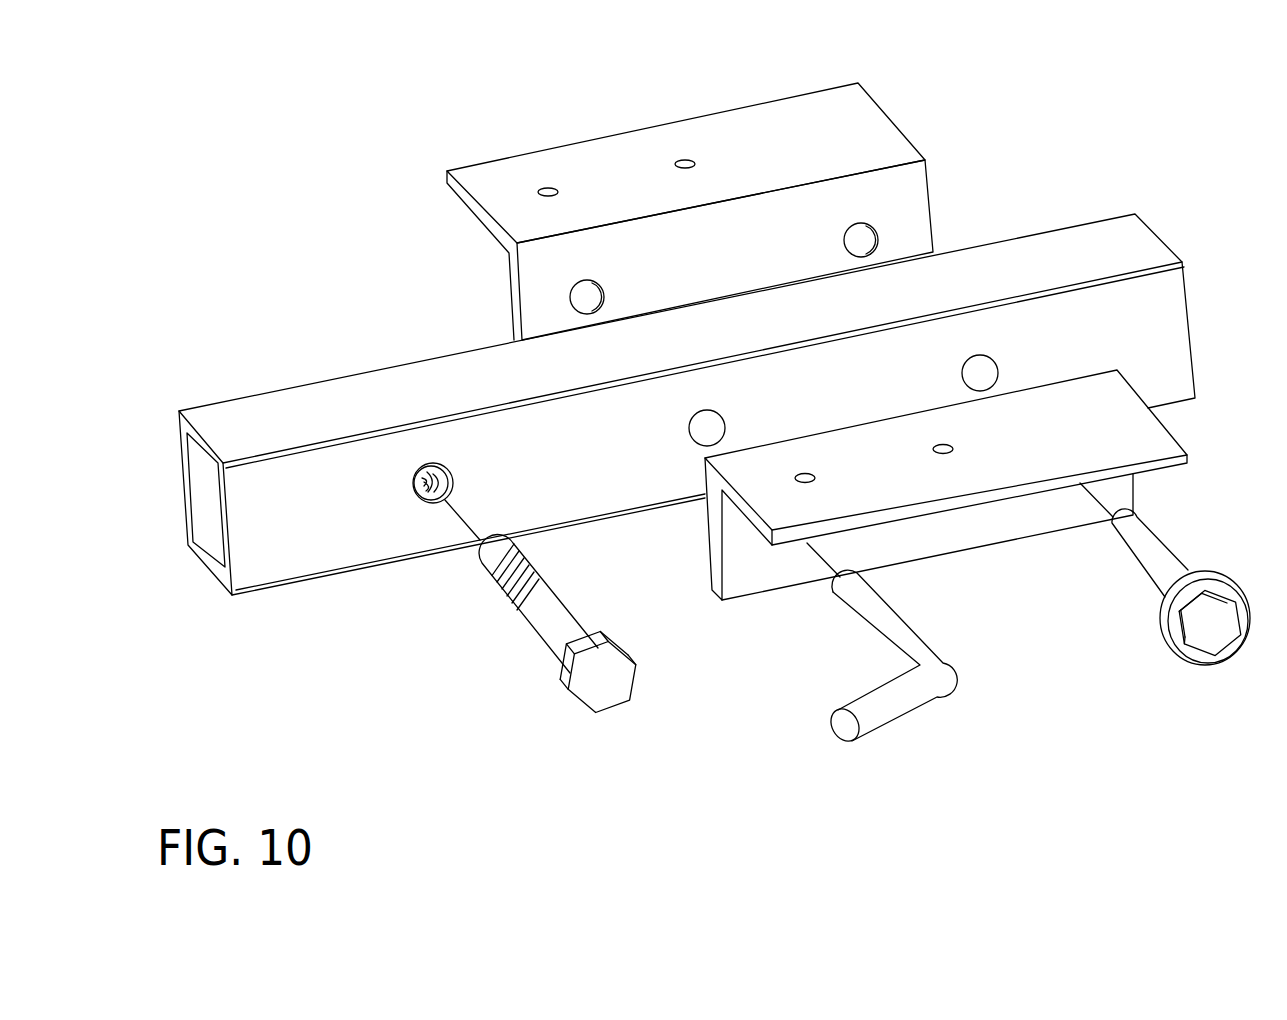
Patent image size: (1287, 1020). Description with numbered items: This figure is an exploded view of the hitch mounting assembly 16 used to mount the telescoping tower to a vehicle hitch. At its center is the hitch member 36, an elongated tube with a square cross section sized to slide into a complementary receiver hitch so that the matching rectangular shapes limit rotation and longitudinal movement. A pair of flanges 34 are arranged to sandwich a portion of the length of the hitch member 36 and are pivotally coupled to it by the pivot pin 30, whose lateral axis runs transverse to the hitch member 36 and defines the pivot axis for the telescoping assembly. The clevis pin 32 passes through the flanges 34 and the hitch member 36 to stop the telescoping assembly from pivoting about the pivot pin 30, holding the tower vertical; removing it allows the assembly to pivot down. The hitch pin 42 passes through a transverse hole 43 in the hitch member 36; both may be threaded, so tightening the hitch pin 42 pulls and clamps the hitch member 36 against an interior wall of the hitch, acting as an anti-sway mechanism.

The mounting assembly 16 is at (270, 166).
The flanges 34 is at (877, 140).
The hitch member 36 is at (325, 408).
The clevis pin 32 is at (903, 633).
The pivot pin 30 is at (1143, 563).
The hitch pin 42 is at (547, 630).
The transverse hole 43 is at (412, 488).